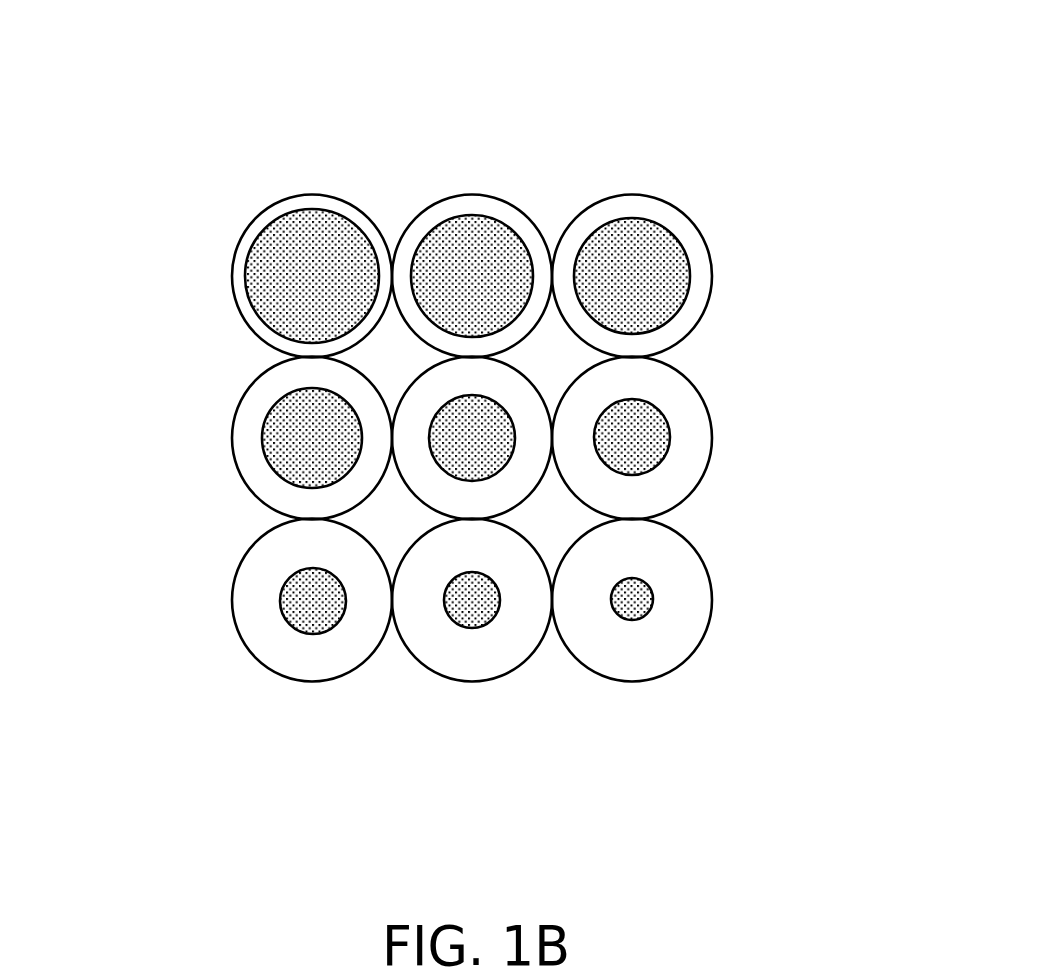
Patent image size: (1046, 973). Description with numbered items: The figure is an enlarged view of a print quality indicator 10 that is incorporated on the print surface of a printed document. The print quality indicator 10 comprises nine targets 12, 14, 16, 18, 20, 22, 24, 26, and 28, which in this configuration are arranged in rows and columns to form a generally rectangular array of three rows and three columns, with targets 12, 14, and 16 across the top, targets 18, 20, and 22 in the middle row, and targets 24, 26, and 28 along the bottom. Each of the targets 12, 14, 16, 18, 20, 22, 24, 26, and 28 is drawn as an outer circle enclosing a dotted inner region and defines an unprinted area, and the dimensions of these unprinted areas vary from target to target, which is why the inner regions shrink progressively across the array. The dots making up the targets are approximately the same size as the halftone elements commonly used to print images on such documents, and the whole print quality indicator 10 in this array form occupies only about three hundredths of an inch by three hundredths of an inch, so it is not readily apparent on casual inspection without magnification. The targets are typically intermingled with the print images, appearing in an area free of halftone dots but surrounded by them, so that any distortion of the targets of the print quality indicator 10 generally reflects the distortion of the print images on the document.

The print quality indicator 10 is at (778, 117).
The target 12 is at (303, 189).
The target 14 is at (475, 187).
The target 16 is at (640, 187).
The target 18 is at (222, 440).
The target 20 is at (535, 371).
The target 22 is at (729, 440).
The target 24 is at (221, 601).
The target 26 is at (458, 688).
The target 28 is at (635, 690).